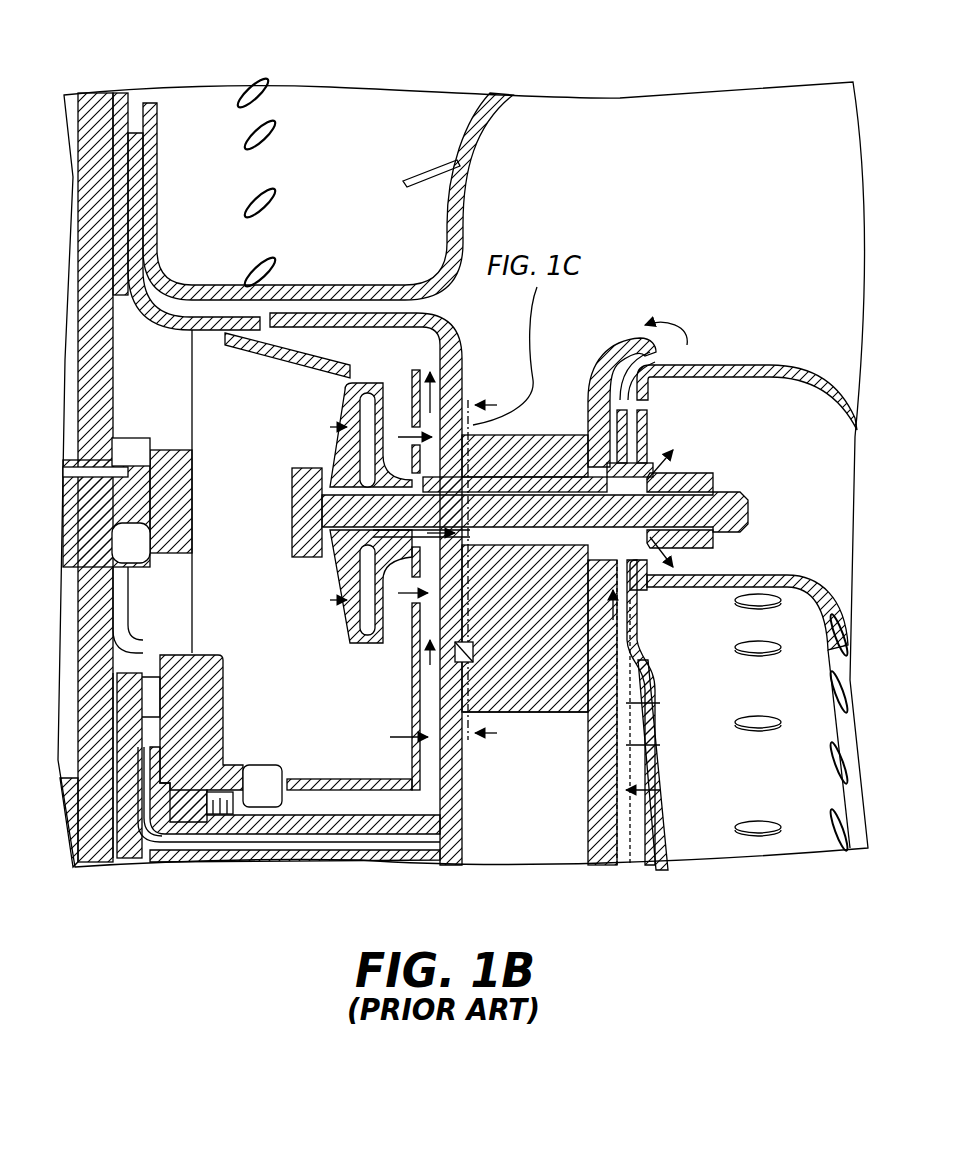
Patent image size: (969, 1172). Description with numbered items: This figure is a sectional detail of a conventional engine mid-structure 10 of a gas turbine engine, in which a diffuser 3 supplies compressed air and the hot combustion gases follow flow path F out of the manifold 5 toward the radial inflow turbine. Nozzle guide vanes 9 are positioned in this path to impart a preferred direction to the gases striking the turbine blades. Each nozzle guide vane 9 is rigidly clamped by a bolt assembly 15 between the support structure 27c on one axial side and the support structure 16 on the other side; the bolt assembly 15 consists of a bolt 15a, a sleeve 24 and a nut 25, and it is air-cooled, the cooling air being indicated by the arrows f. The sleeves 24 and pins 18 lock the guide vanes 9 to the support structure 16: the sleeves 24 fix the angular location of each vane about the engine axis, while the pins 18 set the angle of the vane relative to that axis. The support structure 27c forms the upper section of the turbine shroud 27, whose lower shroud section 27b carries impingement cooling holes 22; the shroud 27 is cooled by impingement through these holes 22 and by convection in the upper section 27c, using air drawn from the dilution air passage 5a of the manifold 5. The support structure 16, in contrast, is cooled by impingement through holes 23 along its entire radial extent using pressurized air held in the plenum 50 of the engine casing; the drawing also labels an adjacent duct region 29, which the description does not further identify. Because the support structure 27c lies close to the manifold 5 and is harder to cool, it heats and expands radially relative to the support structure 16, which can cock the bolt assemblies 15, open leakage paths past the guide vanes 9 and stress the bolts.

The conventional engine mid-structure 10 is at (610, 88).
The diffuser 3 is at (122, 170).
The flow path F is at (630, 227).
The manifold 5 is at (815, 281).
The dilution air passage 5a is at (806, 493).
The cooling air duct 29 is at (423, 307).
The upper shroud section / guide vane support structure 27c is at (610, 353).
The support structure 16 is at (460, 373).
The impingement cooling holes 23 is at (400, 380).
The bolt assembly 15 is at (258, 455).
The bolt 15a is at (297, 512).
The cooling air flow arrows f is at (353, 600).
The sleeve 24 is at (575, 478).
The nut 25 is at (695, 473).
The plenum 50 is at (302, 685).
The pin 18 is at (467, 660).
The nozzle guide vane 9 is at (510, 690).
The lower shroud section 27b is at (598, 747).
The turbine shroud 27 is at (572, 805).
The impingement cooling holes 22 is at (653, 787).